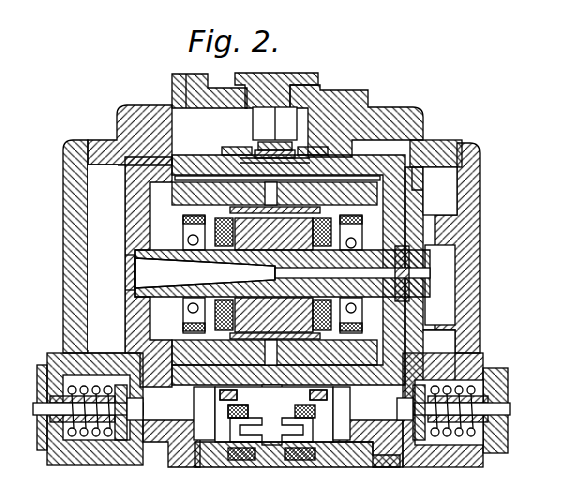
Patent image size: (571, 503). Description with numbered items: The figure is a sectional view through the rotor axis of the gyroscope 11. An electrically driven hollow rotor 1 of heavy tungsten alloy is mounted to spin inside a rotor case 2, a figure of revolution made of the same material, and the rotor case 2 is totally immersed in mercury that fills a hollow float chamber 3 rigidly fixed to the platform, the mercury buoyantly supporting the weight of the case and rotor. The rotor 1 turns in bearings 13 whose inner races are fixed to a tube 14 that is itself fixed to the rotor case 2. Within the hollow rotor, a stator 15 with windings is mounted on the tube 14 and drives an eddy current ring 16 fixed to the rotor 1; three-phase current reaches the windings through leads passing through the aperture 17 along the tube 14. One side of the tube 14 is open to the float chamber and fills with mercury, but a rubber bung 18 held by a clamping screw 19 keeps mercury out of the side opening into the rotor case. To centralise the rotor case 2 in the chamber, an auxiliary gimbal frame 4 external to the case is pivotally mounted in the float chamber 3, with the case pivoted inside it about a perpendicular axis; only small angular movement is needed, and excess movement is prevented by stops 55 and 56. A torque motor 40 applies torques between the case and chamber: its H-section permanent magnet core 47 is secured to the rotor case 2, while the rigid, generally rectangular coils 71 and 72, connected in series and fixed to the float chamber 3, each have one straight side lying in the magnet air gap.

The rotor 1 is at (338, 192).
The rotor case 2 is at (416, 147).
The float chamber 3 is at (450, 137).
The auxiliary gimbal frame 4 is at (222, 150).
The gyroscope 11 is at (354, 81).
The bearing 13 is at (166, 318).
The tube 14 is at (246, 290).
The stator 15 is at (270, 390).
The eddy current ring 16 is at (312, 340).
The aperture 17 is at (170, 273).
The rubber bung 18 is at (284, 240).
The clamping screw 19 is at (412, 245).
The torque motor 40 is at (298, 422).
The permanent magnet core 47 is at (238, 412).
The stop 55 is at (440, 258).
The stop 56 is at (103, 297).
The coil 71 is at (230, 410).
The coil 72 is at (320, 430).